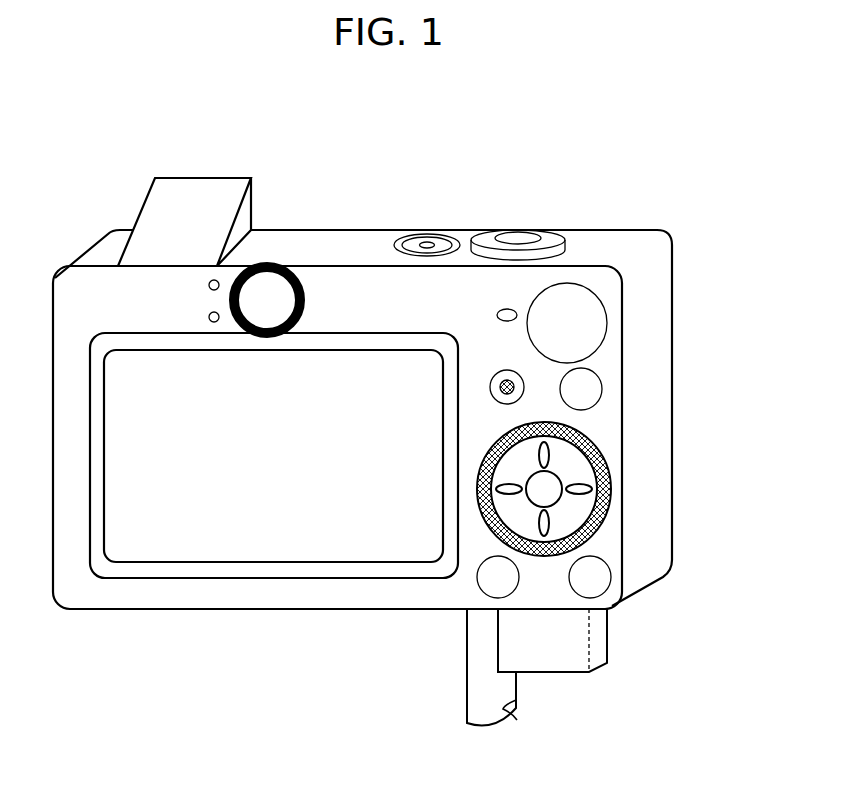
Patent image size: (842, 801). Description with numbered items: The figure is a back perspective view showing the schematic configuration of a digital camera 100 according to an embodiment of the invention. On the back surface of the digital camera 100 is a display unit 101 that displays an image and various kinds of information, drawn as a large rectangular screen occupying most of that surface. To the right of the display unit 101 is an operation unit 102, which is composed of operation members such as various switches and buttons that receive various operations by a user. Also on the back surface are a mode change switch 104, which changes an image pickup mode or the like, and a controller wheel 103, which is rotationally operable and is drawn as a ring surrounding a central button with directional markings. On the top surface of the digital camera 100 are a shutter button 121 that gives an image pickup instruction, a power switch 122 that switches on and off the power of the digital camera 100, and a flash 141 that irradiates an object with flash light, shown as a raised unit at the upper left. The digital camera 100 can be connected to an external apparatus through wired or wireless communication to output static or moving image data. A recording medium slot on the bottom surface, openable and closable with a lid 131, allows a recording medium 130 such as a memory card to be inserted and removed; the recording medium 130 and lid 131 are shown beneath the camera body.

The digital camera 100 is at (143, 655).
The display unit 101 is at (297, 535).
The operation unit 102 is at (523, 255).
The controller wheel 103 is at (495, 540).
The mode change switch 104 is at (585, 305).
The shutter button 121 is at (518, 238).
The power switch 122 is at (427, 245).
The recording medium 130 is at (578, 650).
The lid 131 is at (517, 720).
The flash 141 is at (190, 190).